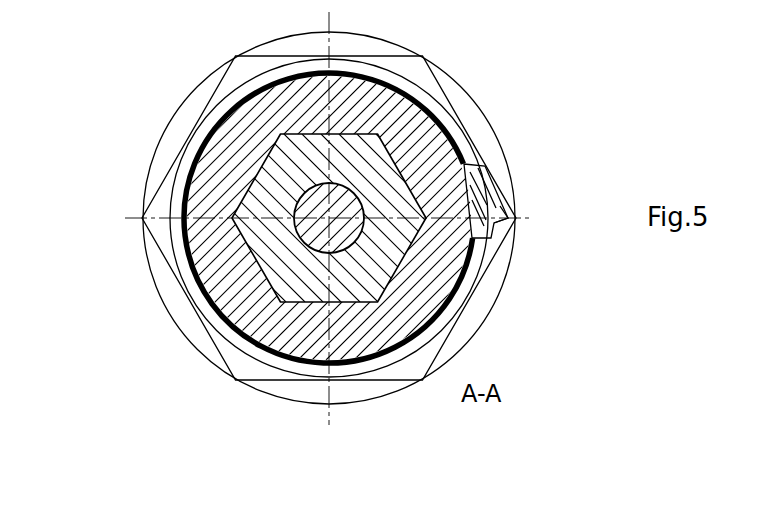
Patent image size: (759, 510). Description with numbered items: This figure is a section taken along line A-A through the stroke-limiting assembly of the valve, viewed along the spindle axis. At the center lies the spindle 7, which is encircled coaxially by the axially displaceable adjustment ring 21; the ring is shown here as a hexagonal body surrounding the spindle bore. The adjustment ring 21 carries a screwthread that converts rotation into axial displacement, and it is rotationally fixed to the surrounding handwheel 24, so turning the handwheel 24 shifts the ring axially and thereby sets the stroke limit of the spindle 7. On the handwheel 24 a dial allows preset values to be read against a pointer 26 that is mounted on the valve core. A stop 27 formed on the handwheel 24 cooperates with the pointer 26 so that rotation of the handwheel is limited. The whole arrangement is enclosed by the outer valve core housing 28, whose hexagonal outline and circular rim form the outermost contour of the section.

The spindle 7 is at (333, 215).
The adjustment ring 21 is at (392, 243).
The handwheel 24 is at (391, 325).
The pointer 26 is at (478, 171).
The stop 27 is at (509, 226).
The valve core housing 28 is at (473, 320).